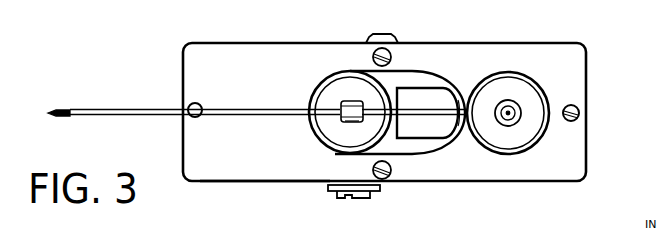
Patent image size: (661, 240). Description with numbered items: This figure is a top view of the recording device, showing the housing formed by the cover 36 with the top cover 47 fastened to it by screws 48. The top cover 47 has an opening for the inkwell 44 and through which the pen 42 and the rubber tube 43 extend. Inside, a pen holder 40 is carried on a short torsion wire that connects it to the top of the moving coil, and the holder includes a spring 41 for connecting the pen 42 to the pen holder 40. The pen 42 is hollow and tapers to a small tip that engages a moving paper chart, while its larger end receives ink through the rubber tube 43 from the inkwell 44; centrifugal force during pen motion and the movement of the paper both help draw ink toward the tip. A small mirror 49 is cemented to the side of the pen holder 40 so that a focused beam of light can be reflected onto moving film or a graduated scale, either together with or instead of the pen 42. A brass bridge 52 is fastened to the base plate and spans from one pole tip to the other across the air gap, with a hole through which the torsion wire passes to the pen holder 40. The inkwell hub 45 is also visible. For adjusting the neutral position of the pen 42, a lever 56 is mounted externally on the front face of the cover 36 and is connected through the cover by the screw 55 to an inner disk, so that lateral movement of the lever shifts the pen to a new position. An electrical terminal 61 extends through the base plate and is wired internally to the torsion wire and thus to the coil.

The cover 36 is at (255, 184).
The pen holder 40 is at (351, 98).
The spring 41 is at (348, 100).
The pen 42 is at (88, 110).
The rubber tube 43 is at (446, 118).
The inkwell 44 is at (537, 148).
The pulley hub 45 is at (510, 127).
The top cover 47 is at (228, 60).
The screws 48 is at (190, 104).
The mirror 49 is at (364, 121).
The brass bridge 52 is at (423, 88).
The screw 55 is at (347, 200).
The lever 56 is at (330, 188).
The electrical terminal 61 is at (393, 33).